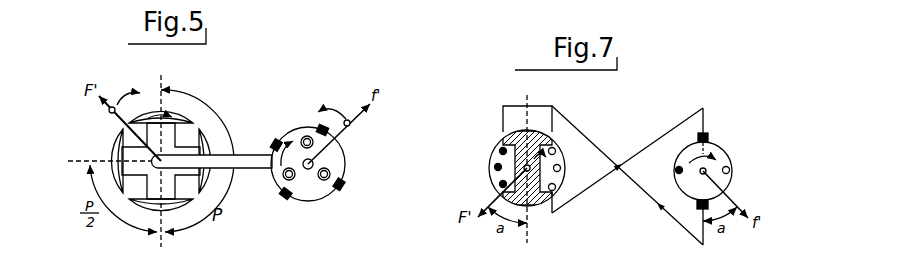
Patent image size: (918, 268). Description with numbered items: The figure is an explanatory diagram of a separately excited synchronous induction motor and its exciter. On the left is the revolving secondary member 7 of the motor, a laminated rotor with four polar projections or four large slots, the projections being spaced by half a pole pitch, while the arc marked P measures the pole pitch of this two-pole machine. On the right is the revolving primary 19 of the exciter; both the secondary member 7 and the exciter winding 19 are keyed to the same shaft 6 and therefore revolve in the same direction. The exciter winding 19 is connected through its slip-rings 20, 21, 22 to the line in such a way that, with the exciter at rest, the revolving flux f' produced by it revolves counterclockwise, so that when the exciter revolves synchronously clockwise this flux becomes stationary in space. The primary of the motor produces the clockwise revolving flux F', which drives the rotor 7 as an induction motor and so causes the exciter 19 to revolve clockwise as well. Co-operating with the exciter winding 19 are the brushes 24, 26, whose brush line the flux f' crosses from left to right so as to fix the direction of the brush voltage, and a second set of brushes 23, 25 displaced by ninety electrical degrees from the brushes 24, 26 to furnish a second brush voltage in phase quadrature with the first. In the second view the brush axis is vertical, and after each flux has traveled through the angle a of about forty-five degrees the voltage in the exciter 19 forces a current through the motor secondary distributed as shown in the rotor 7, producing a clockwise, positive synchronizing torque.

In FIG. 5, the shaft 6 is at (241, 172).
In FIG. 5, the revolving secondary member 7 is at (207, 137).
In FIG. 7, the revolving secondary member 7 is at (489, 157).
In FIG. 5, the revolving primary of the exciter 19 is at (326, 200).
In FIG. 7, the revolving primary of the exciter 19 is at (733, 157).
In FIG. 5, the slip-ring 20 is at (316, 143).
In FIG. 5, the slip-ring 21 is at (297, 184).
In FIG. 5, the slip-ring 22 is at (333, 172).
In FIG. 5, the brush 23 is at (273, 137).
In FIG. 5, the brush 24 is at (321, 125).
In FIG. 7, the brush 24 is at (710, 137).
In FIG. 5, the brush 25 is at (344, 184).
In FIG. 5, the brush 26 is at (286, 199).
In FIG. 7, the brush 26 is at (697, 206).